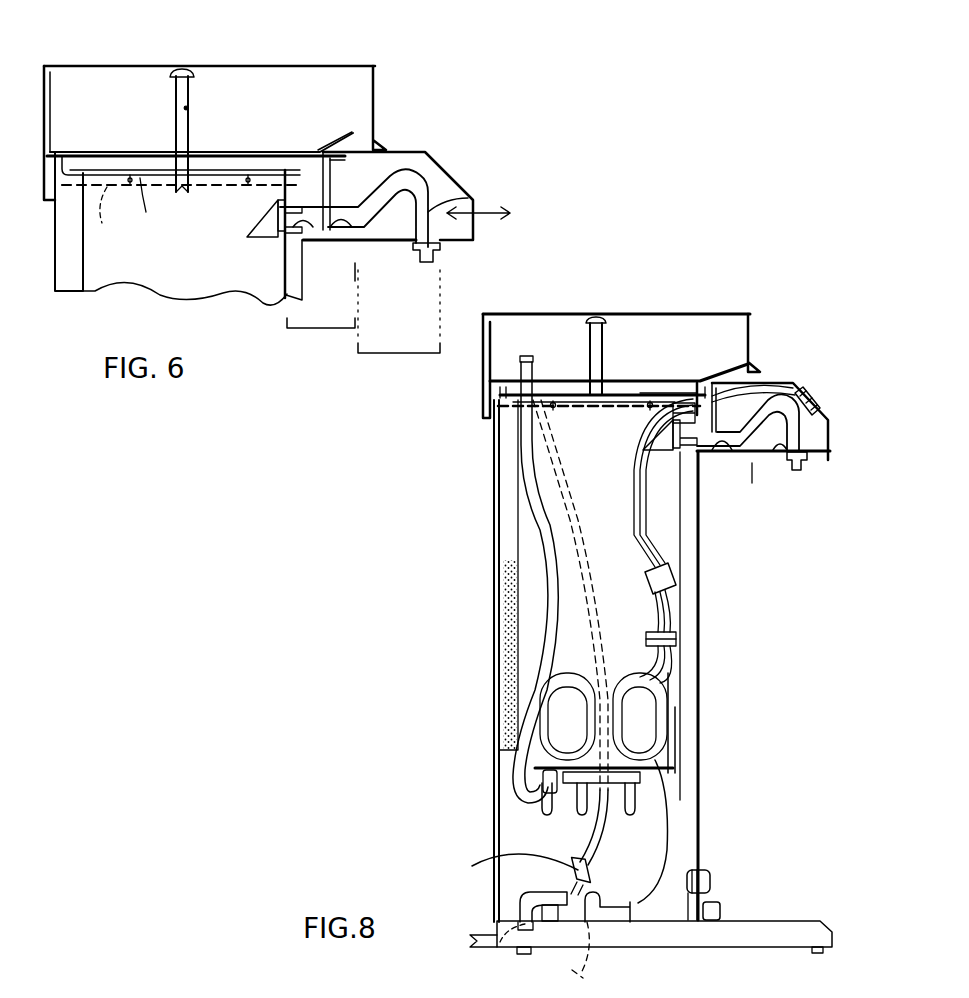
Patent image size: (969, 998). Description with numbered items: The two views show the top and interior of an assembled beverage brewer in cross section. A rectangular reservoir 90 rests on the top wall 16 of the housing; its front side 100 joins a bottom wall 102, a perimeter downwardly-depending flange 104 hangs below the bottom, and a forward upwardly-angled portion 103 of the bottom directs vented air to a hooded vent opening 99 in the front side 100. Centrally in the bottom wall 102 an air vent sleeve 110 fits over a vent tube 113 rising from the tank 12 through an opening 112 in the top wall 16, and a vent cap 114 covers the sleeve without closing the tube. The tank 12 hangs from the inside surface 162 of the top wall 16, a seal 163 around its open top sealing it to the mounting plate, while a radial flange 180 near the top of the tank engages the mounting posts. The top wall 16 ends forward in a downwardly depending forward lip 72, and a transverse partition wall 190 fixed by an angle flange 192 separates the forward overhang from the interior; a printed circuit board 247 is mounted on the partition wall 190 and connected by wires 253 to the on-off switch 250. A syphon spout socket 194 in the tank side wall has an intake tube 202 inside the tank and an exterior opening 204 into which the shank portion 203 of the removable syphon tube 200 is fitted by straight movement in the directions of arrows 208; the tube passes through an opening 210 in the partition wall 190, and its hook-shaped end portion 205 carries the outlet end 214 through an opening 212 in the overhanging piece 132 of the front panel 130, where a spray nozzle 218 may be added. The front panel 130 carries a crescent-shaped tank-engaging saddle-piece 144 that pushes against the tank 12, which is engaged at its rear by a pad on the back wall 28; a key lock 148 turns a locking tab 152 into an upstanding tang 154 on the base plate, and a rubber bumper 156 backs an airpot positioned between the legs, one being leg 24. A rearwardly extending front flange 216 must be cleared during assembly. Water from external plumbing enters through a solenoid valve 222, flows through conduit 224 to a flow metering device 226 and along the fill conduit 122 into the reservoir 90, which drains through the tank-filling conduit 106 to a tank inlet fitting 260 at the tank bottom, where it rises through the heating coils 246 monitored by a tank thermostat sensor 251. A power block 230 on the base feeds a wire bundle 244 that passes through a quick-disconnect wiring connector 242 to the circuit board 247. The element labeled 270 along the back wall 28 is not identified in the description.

In FIG. 6, the tank 12 is at (138, 289).
In FIG. 8, the tank 12 is at (698, 660).
In FIG. 6, the top wall 16 is at (117, 150).
In FIG. 8, the leg 24 is at (792, 924).
In FIG. 8, the back wall 28 is at (501, 746).
In FIG. 6, the forward lip 72 is at (478, 240).
In FIG. 6, the reservoir 90 is at (256, 62).
In FIG. 6, the vent opening 99 is at (378, 150).
In FIG. 6, the front side 100 is at (373, 90).
In FIG. 6, the bottom wall 102 is at (272, 150).
In FIG. 6, the upwardly-angled portion 103 is at (340, 134).
In FIG. 8, the downwardly-depending flange 104 is at (483, 407).
In FIG. 8, the tank-filling conduit 106 is at (532, 590).
In FIG. 6, the air vent sleeve 110 is at (176, 92).
In FIG. 6, the opening 112 is at (188, 183).
In FIG. 6, the vent tube 113 is at (189, 108).
In FIG. 6, the vent cap 114 is at (196, 75).
In FIG. 8, the vent cap 114 is at (607, 320).
In FIG. 8, the fill conduit 122 is at (590, 585).
In FIG. 6, the front panel 130 is at (300, 286).
In FIG. 8, the front panel 130 is at (700, 795).
In FIG. 6, the overhanging piece 132 is at (442, 262).
In FIG. 8, the overhanging piece 132 is at (752, 484).
In FIG. 8, the tank-engaging saddle-piece 144 is at (697, 724).
In FIG. 8, the key lock 148 is at (708, 873).
In FIG. 8, the locking tab 152 is at (690, 907).
In FIG. 8, the upstanding tang 154 is at (700, 910).
In FIG. 8, the rubber bumper 156 is at (715, 905).
In FIG. 6, the inside surface 162 is at (210, 156).
In FIG. 6, the seal 163 is at (159, 207).
In FIG. 6, the radial flange 180 is at (181, 215).
In FIG. 6, the partition wall 190 is at (345, 232).
In FIG. 8, the partition wall 190 is at (748, 388).
In FIG. 6, the angle flange 192 is at (338, 162).
In FIG. 8, the angle flange 192 is at (762, 421).
In FIG. 6, the syphon spout socket 194 is at (276, 196).
In FIG. 8, the syphon spout socket 194 is at (684, 470).
In FIG. 6, the syphon tube 200 is at (426, 190).
In FIG. 8, the syphon tube 200 is at (800, 432).
In FIG. 6, the intake tube 202 is at (278, 240).
In FIG. 8, the intake tube 202 is at (654, 452).
In FIG. 6, the shank portion 203 is at (321, 336).
In FIG. 6, the exterior opening 204 is at (336, 274).
In FIG. 6, the hook-shaped end portion 205 is at (399, 324).
In FIG. 6, the arrows 208 is at (487, 222).
In FIG. 6, the opening 210 is at (358, 229).
In FIG. 8, the opening 210 is at (723, 452).
In FIG. 6, the opening 212 is at (470, 194).
In FIG. 8, the opening 212 is at (778, 452).
In FIG. 6, the outlet end 214 is at (432, 266).
In FIG. 8, the outlet end 214 is at (803, 466).
In FIG. 8, the front flange 216 is at (830, 453).
In FIG. 8, the spray nozzle 218 is at (795, 470).
In FIG. 8, the solenoid valve 222 is at (558, 892).
In FIG. 8, the conduit 224 is at (582, 886).
In FIG. 8, the flow metering device 226 is at (505, 865).
In FIG. 8, the power block 230 is at (618, 917).
In FIG. 8, the wiring connector 242 is at (650, 639).
In FIG. 8, the wire bundle 244 is at (673, 582).
In FIG. 8, the heating coils 246 is at (662, 692).
In FIG. 6, the printed circuit board 247 is at (328, 203).
In FIG. 8, the printed circuit board 247 is at (780, 383).
In FIG. 8, the on-off switch 250 is at (815, 413).
In FIG. 8, the tank thermostat sensor 251 is at (695, 758).
In FIG. 8, the wires 253 is at (806, 394).
In FIG. 8, the tank inlet fitting 260 is at (545, 785).
In FIG. 8, the insulation 270 is at (503, 657).